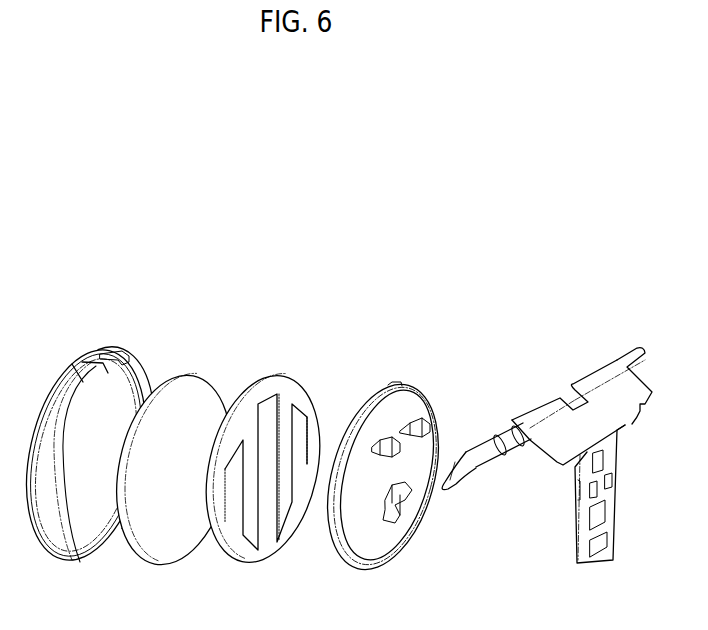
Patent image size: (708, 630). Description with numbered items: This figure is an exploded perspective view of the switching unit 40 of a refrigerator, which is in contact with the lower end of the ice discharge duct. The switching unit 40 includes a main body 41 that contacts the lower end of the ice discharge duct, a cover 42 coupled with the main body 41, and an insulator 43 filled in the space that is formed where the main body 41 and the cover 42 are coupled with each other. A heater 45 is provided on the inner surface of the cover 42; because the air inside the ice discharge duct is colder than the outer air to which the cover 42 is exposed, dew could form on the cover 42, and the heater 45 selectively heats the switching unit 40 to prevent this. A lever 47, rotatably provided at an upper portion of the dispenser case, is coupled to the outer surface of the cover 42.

The switching unit 40 is at (593, 288).
The main body 41 is at (82, 382).
The cover 42 is at (410, 390).
The insulator 43 is at (200, 380).
The heater 45 is at (283, 381).
The lever 47 is at (600, 388).